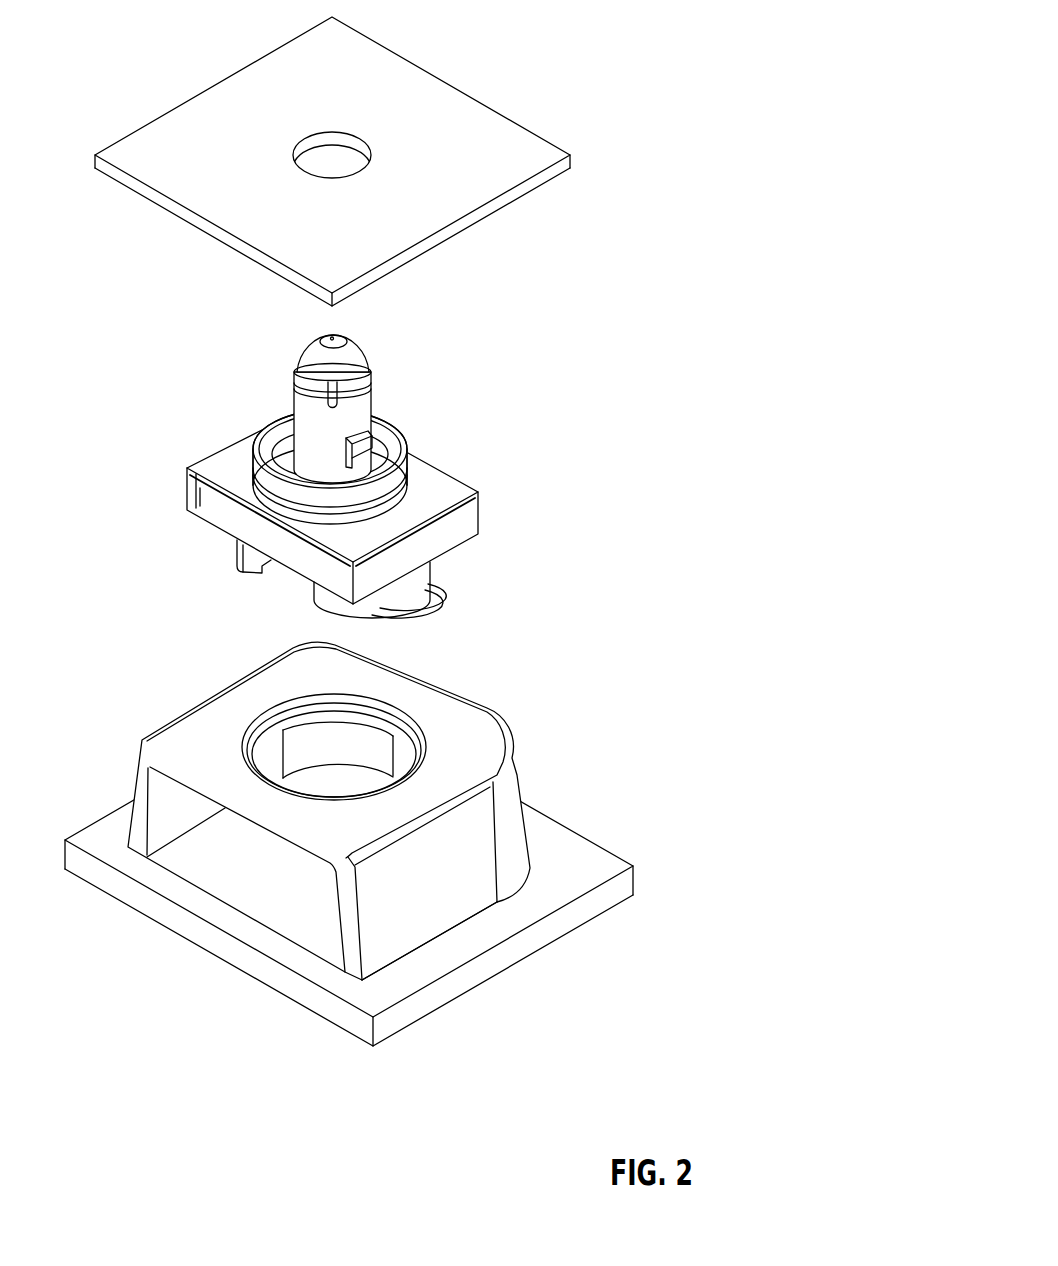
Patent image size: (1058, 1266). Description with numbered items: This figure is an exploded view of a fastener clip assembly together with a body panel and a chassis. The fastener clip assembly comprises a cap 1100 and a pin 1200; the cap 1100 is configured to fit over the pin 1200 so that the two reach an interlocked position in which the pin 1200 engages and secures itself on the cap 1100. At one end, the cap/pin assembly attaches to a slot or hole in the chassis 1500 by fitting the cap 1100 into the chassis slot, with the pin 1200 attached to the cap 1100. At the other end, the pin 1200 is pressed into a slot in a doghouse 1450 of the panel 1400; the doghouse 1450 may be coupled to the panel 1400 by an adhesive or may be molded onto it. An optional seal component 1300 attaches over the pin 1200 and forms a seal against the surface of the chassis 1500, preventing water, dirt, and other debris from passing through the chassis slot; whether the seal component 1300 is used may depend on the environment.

The cap 1100 is at (352, 420).
The pin 1200 is at (420, 497).
The seal component 1300 is at (393, 440).
The panel 1400 is at (563, 878).
The doghouse 1450 is at (470, 740).
The chassis 1500 is at (400, 100).